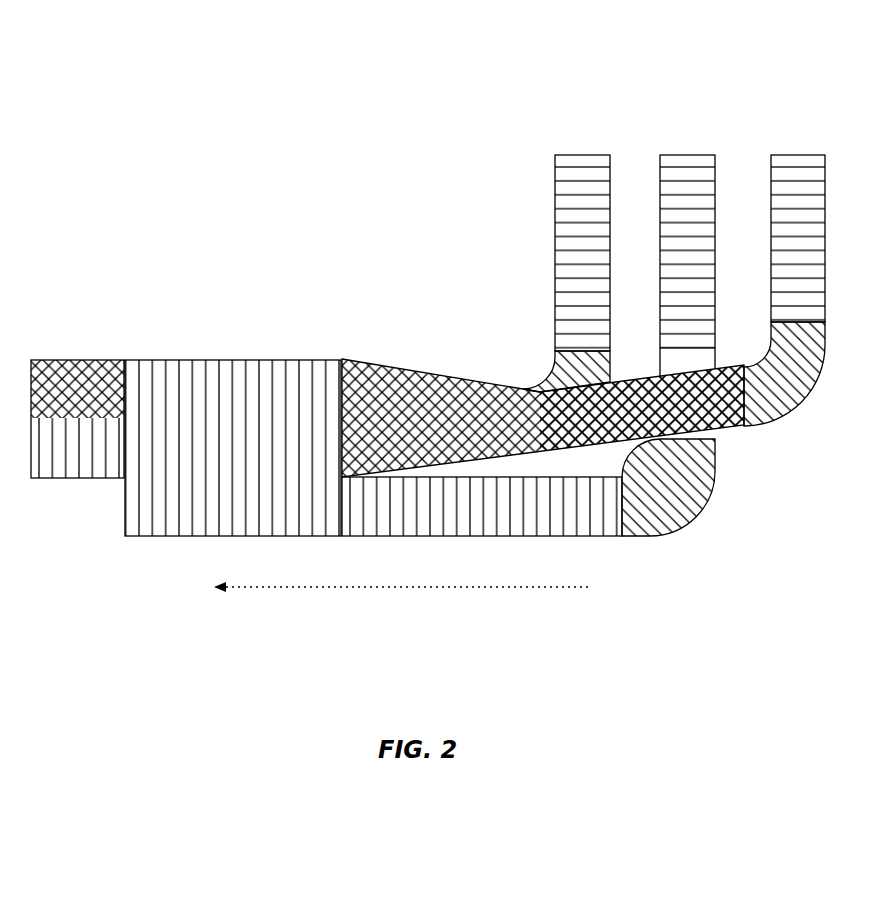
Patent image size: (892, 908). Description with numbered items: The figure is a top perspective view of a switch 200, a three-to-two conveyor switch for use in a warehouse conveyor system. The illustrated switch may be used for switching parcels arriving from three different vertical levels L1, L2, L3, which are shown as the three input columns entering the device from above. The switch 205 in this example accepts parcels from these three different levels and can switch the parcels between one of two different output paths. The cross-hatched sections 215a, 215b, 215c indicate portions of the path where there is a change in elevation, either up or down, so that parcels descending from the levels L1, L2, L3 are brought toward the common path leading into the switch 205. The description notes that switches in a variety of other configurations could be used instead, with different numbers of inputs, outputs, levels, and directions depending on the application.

The switch 200 is at (303, 98).
The switch 205 is at (238, 360).
The cross-hatched section 215a is at (95, 360).
The cross-hatched section 215b is at (393, 368).
The cross-hatched section 215c is at (512, 395).
The vertical level L1 is at (582, 136).
The vertical level L2 is at (687, 136).
The vertical level L3 is at (798, 136).